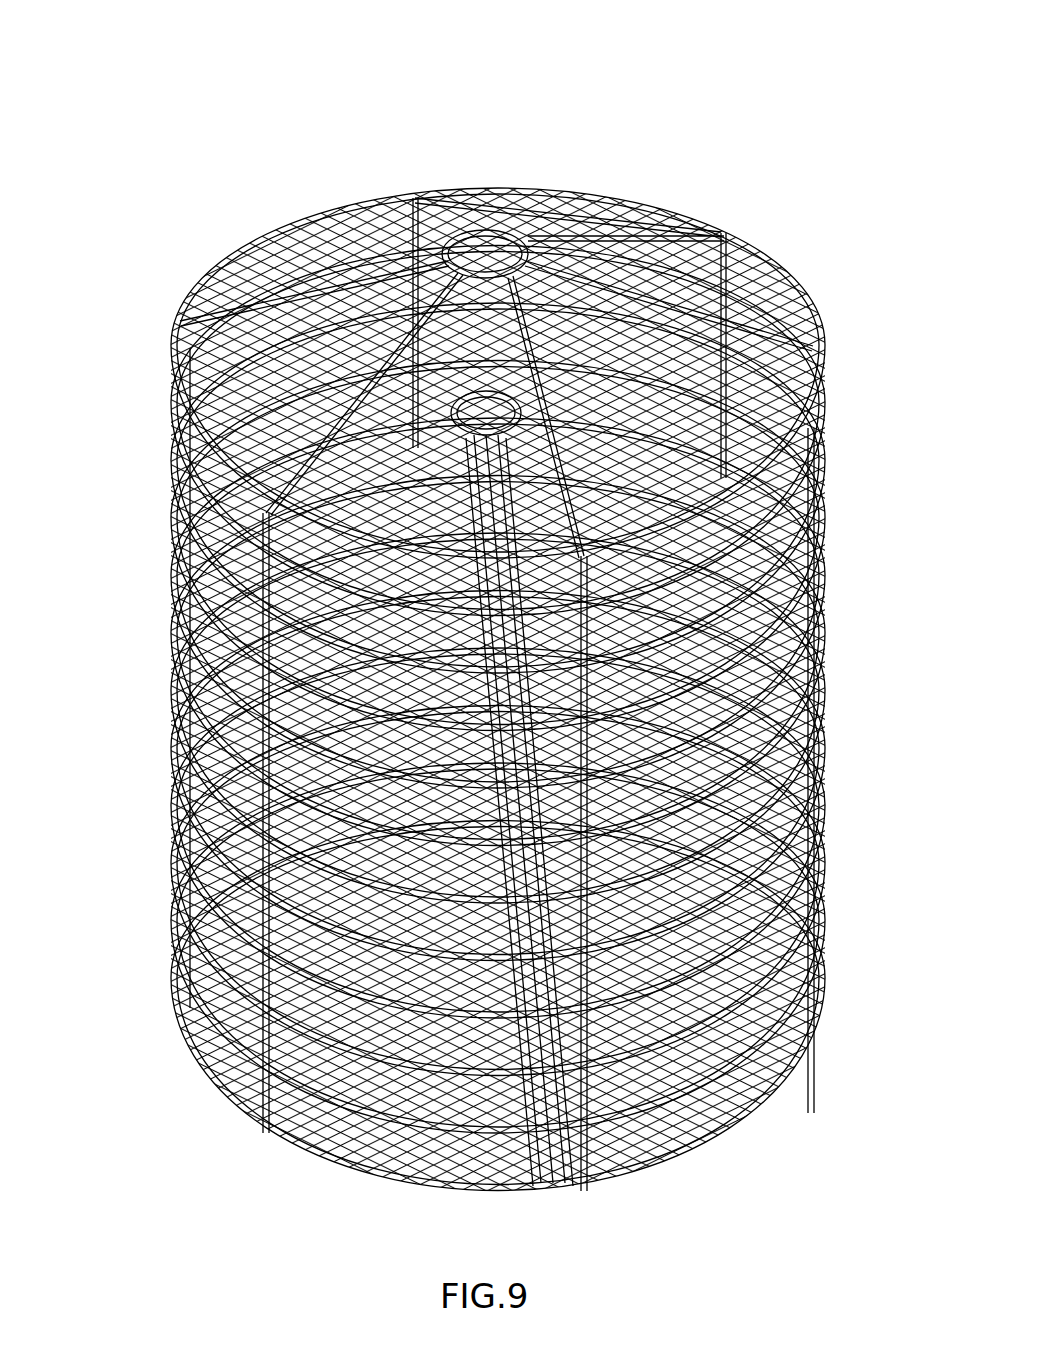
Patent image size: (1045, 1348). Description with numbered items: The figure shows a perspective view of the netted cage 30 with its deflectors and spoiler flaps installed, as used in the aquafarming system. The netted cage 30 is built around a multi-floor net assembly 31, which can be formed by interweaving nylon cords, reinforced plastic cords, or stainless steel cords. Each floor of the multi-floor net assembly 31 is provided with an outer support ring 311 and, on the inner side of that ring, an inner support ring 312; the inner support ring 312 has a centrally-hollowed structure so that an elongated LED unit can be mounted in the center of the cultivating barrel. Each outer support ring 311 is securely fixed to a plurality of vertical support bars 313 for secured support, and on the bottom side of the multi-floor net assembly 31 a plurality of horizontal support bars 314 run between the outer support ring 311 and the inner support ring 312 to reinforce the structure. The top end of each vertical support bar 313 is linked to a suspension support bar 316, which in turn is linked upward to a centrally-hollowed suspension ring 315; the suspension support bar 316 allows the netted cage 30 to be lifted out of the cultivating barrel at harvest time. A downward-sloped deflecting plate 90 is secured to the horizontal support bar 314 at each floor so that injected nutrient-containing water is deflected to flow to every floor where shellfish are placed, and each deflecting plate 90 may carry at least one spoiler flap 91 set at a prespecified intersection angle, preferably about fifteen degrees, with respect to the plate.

The netted cage 30 is at (208, 98).
The multi-floor net assembly 31 is at (798, 326).
The outer support ring 311 is at (745, 240).
The inner support ring 312 is at (420, 258).
The vertical support bar 313 is at (805, 618).
The horizontal support bar 314 is at (185, 330).
The suspension ring 315 is at (505, 232).
The suspension support bar 316 is at (245, 296).
The deflecting plate 90 is at (520, 1180).
The spoiler flap 91 is at (596, 1162).